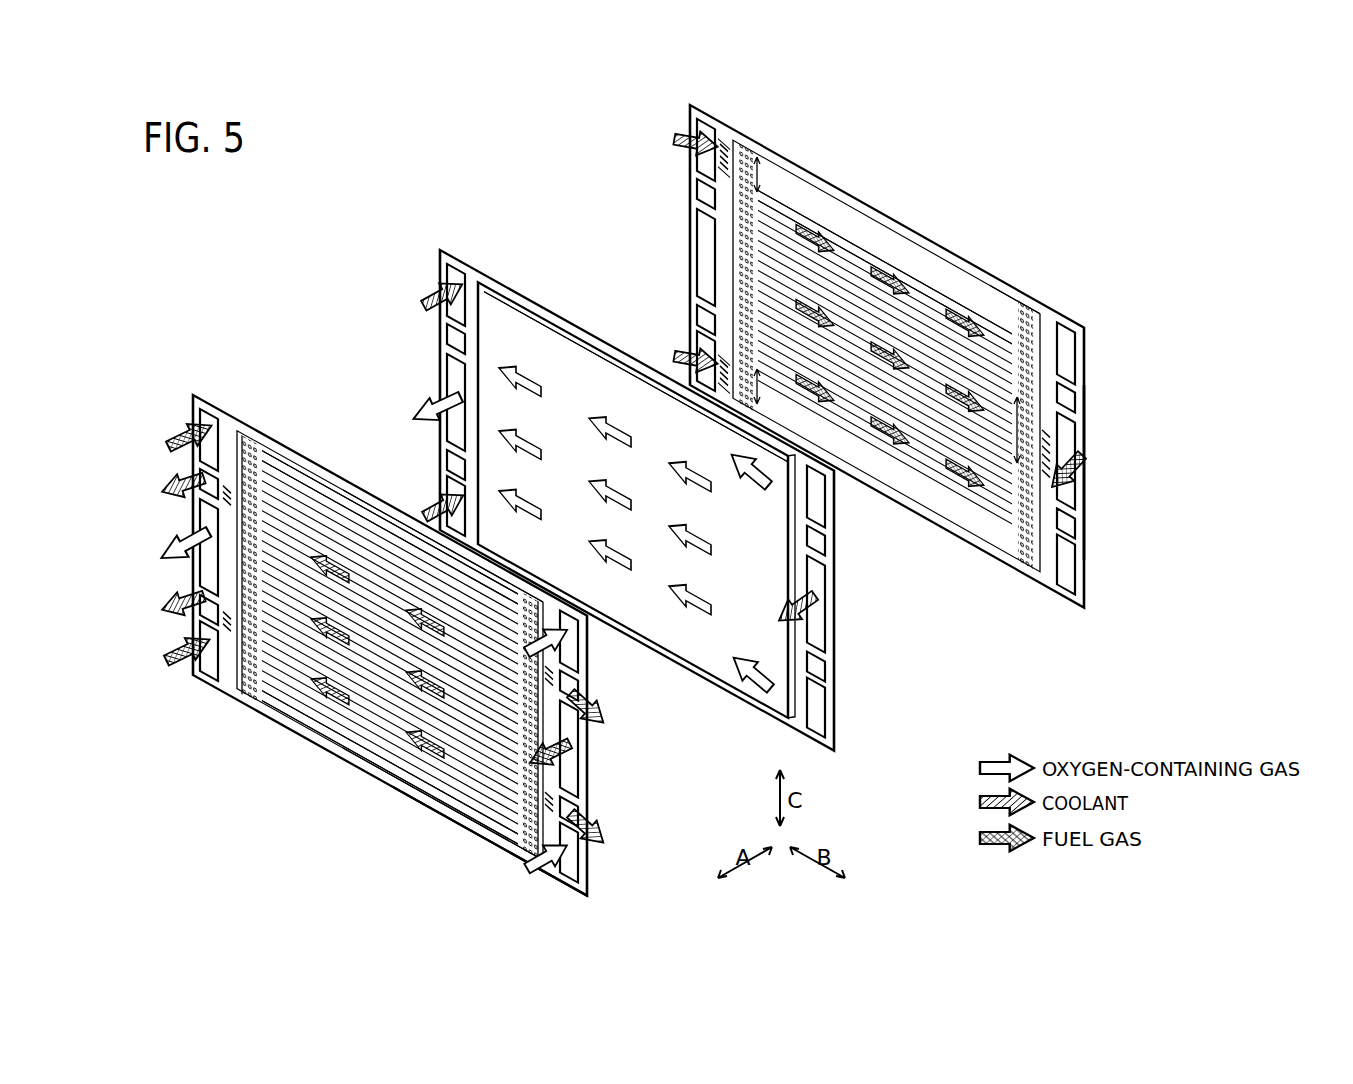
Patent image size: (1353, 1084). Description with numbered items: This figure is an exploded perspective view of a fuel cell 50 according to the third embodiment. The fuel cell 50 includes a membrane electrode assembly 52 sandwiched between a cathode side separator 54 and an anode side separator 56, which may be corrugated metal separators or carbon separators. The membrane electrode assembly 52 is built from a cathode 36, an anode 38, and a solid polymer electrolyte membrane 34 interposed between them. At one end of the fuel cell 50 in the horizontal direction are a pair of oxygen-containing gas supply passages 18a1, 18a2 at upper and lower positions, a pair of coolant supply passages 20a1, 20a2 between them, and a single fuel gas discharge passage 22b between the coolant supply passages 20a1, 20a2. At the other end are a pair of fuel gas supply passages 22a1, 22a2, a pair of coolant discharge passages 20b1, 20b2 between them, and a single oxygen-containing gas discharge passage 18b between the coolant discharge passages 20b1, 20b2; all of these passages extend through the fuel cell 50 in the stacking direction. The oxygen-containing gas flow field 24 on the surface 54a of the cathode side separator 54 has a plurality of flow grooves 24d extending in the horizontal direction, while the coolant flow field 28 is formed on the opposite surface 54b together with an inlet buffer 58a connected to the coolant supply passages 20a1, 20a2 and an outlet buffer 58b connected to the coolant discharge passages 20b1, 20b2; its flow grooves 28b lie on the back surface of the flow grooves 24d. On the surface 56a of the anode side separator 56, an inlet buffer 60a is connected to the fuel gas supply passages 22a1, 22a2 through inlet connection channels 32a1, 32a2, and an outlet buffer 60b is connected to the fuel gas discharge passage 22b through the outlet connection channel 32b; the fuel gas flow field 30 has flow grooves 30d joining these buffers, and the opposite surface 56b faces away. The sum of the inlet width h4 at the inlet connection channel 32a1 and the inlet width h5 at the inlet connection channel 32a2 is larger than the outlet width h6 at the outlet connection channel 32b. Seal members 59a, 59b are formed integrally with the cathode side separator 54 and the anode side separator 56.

The fuel cell 50 is at (241, 217).
The membrane electrode assembly 52 is at (434, 242).
The cathode side separator 54 is at (192, 395).
The anode side separator 56 is at (1094, 322).
The oxygen-containing gas supply passage 18a1 is at (565, 652).
The oxygen-containing gas supply passage 18a2 is at (570, 868).
The oxygen-containing gas discharge passage 18b is at (203, 540).
The coolant supply passage 20a1 is at (567, 684).
The coolant supply passage 20a2 is at (573, 803).
The coolant discharge passage 20b1 is at (203, 488).
The coolant discharge passage 20b2 is at (203, 600).
The fuel gas supply passage 22a1 is at (200, 432).
The fuel gas supply passage 22a2 is at (203, 640).
The fuel gas discharge passage 22b is at (565, 752).
The oxygen-containing gas flow field 24 is at (354, 513).
The flow grooves 24d is at (285, 456).
The coolant flow field 28 is at (362, 736).
The flow grooves 28b is at (304, 676).
The fuel gas flow field 30 is at (952, 289).
The flow grooves 30d is at (890, 260).
The inlet connection channel 32a1 is at (728, 140).
The inlet connection channel 32a2 is at (725, 338).
The outlet connection channel 32b is at (1048, 428).
The solid polymer electrolyte membrane 34 is at (603, 345).
The cathode 36 is at (540, 343).
The anode 38 is at (517, 322).
The surface 54a is at (440, 812).
The surface 54b is at (402, 794).
The surface 56a is at (1078, 545).
The separator surface 56b is at (1078, 573).
The inlet buffer 58a is at (520, 800).
The outlet buffer 58b is at (243, 668).
The seal member 59a is at (405, 505).
The seal member 59b is at (1058, 310).
The inlet buffer 60a is at (742, 250).
The outlet buffer 60b is at (1030, 390).
The width h4 is at (771, 176).
The width h5 is at (772, 386).
The width h6 is at (1015, 430).